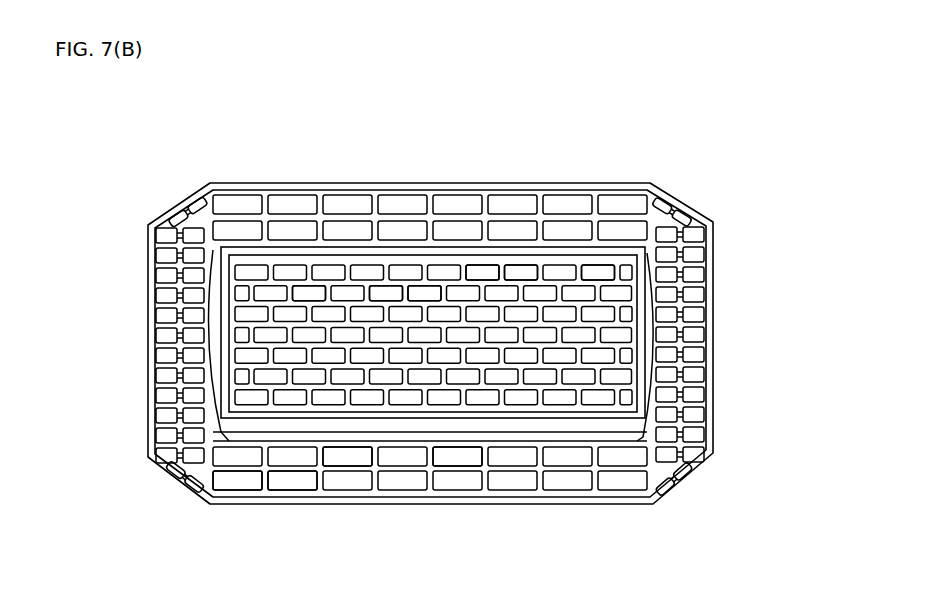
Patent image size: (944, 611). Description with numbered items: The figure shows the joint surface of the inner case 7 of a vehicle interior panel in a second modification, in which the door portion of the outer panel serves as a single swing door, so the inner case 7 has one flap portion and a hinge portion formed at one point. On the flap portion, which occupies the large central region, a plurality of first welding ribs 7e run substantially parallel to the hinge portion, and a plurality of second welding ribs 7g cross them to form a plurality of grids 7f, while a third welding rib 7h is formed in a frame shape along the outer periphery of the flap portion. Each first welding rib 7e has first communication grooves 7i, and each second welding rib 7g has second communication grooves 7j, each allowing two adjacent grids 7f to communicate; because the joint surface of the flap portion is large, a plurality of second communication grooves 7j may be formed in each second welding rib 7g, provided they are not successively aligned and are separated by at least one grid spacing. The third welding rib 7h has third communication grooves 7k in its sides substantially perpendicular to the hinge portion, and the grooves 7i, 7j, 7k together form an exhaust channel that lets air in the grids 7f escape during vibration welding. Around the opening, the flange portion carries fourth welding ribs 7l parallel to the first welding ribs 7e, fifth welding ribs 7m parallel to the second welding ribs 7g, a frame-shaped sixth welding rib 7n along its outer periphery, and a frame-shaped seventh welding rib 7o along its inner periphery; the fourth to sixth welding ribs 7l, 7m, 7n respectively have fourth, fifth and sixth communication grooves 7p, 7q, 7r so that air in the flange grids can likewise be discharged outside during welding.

The inner case 7 is at (181, 145).
The first welding ribs 7e is at (372, 290).
The grids 7f is at (437, 293).
The second welding ribs 7g is at (306, 290).
The third welding rib 7h is at (530, 272).
The first communication grooves 7i is at (482, 272).
The second communication groove 7j is at (585, 275).
The third communication grooves 7k is at (213, 283).
The fourth welding ribs 7l is at (715, 281).
The fifth welding ribs 7m is at (712, 322).
The sixth welding rib 7n is at (717, 347).
The seventh welding rib 7o is at (713, 447).
The fourth communication grooves 7p is at (457, 460).
The fifth communication grooves 7q is at (712, 383).
The sixth communication grooves 7r is at (712, 400).